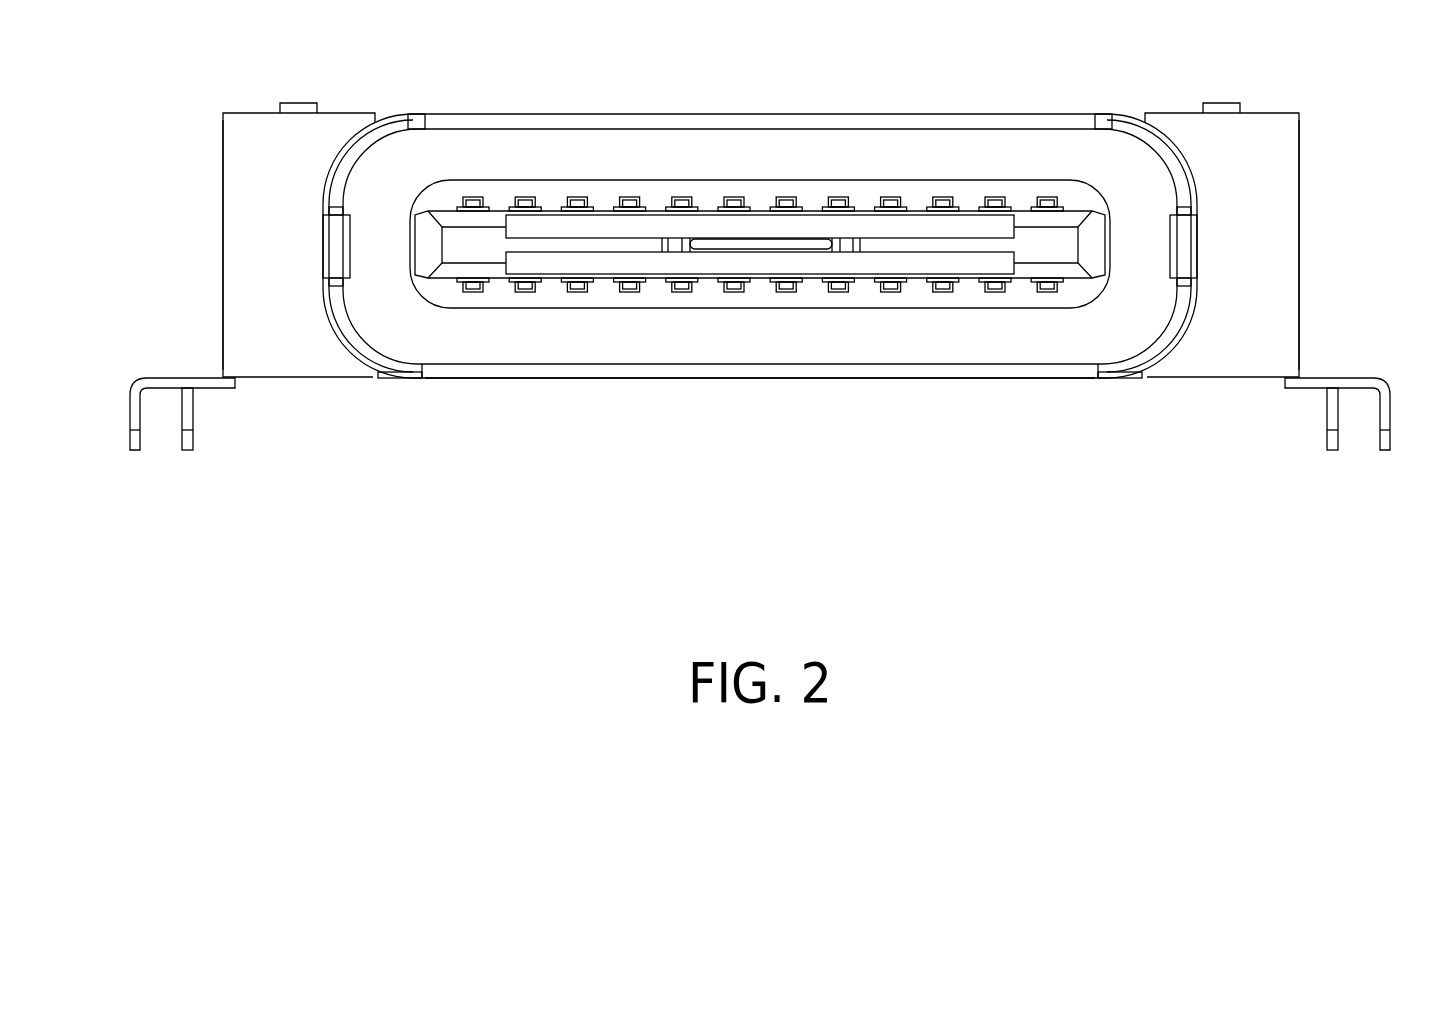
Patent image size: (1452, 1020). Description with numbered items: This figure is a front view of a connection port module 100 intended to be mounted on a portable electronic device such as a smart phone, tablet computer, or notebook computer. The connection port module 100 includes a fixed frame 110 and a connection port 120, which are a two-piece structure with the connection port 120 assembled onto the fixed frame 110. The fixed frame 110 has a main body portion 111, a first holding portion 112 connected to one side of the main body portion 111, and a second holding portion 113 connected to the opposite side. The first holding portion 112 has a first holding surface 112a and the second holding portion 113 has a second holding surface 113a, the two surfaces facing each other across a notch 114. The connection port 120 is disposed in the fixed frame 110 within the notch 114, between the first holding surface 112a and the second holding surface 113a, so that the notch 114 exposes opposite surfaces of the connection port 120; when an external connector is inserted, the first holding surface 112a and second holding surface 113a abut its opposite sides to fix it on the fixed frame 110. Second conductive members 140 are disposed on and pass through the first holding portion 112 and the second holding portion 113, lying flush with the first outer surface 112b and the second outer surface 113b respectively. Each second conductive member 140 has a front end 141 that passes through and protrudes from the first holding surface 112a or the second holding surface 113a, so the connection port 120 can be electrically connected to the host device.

The connection port module 100 is at (784, 302).
The fixed frame 110 is at (760, 257).
The main body portion 111 is at (387, 378).
The first holding portion 112 is at (258, 140).
The first holding surface 112a is at (338, 156).
The first outer surface 112b is at (223, 245).
The second holding portion 113 is at (1261, 140).
The second holding surface 113a is at (1186, 156).
The second outer surface 113b is at (1299, 245).
The notch 114 is at (1055, 385).
The connection port 120 is at (749, 110).
The second conductive member 140 is at (763, 342).
The front end 141 is at (335, 243).